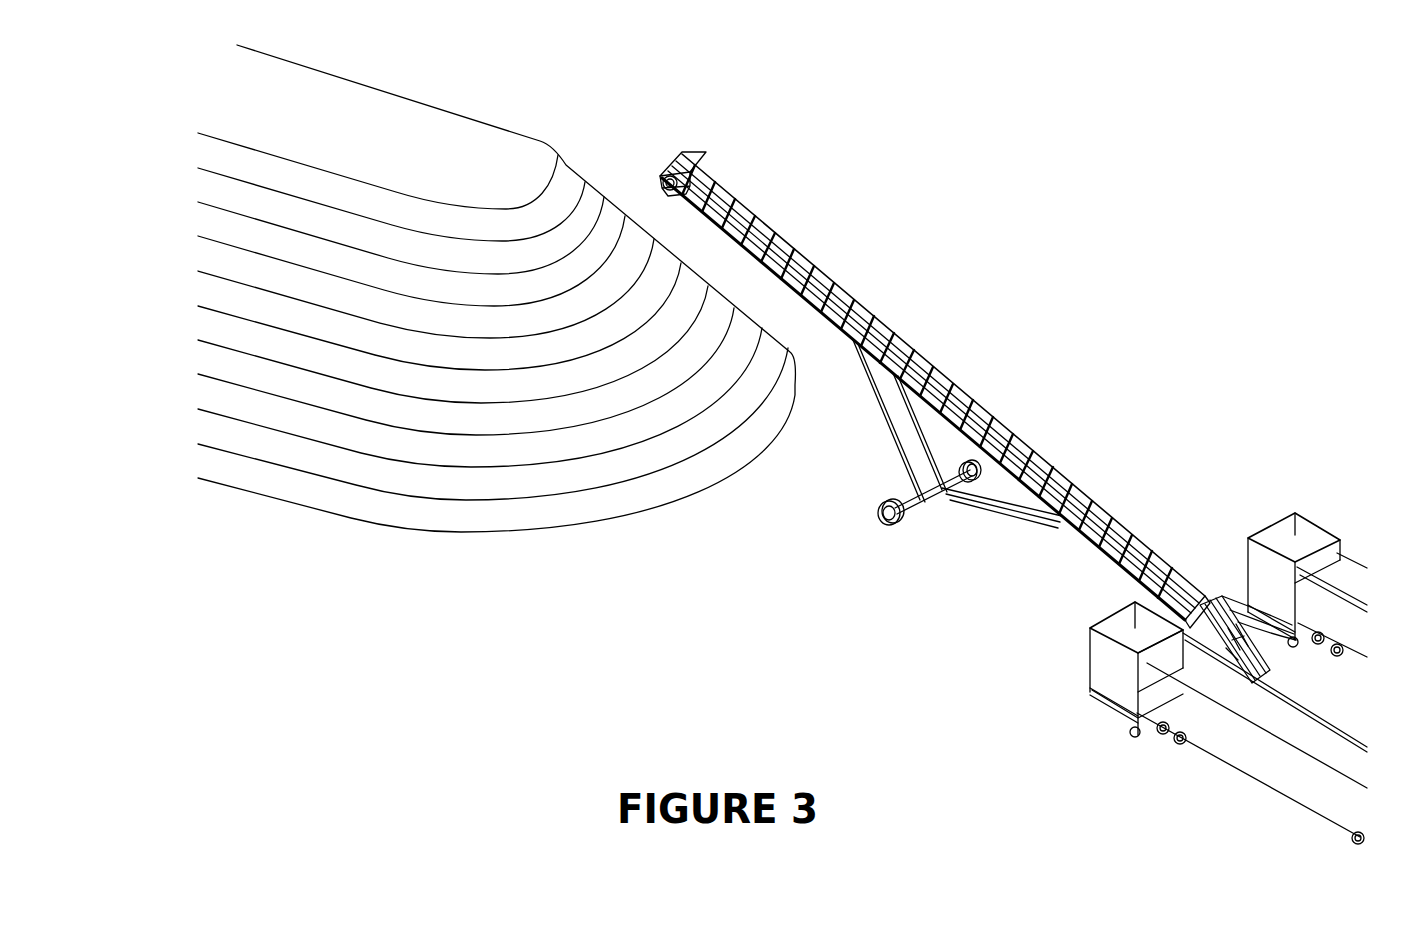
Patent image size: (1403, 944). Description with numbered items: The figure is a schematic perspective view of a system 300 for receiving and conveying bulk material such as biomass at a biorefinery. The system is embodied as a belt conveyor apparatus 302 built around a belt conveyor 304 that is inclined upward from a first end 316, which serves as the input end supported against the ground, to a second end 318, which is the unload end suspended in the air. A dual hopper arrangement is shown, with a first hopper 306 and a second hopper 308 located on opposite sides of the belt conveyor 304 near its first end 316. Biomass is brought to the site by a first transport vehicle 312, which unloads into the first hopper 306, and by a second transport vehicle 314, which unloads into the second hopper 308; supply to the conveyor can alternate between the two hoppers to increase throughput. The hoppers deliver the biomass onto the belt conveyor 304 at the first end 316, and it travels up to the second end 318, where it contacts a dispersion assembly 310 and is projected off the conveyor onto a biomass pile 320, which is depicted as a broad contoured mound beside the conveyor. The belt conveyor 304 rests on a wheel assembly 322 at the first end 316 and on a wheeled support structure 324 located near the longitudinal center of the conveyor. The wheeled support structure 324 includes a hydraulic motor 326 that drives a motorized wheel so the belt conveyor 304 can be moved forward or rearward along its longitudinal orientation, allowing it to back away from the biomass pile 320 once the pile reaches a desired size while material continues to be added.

The system 300 is at (1090, 146).
The belt conveyor apparatus 302 is at (970, 222).
The belt conveyor 304 is at (957, 371).
The first hopper 306 is at (1088, 691).
The second hopper 308 is at (1276, 523).
The dispersion assembly 310 is at (700, 157).
The first transport vehicle 312 is at (1194, 737).
The second transport vehicle 314 is at (1321, 631).
The first end 316 is at (1168, 546).
The second end 318 is at (678, 140).
The biomass pile 320 is at (442, 516).
The wheel assembly 322 is at (1202, 595).
The wheeled support structure 324 is at (887, 498).
The hydraulic motor 326 is at (921, 511).